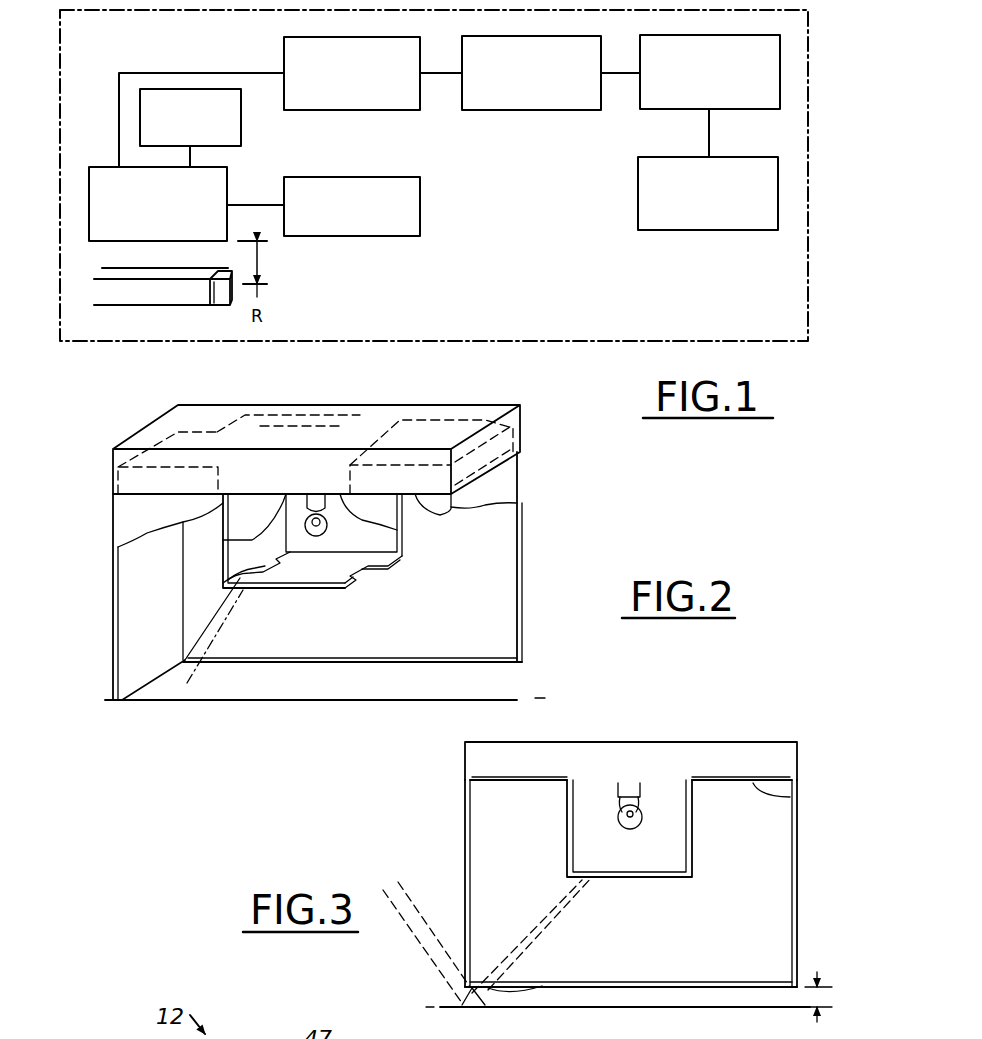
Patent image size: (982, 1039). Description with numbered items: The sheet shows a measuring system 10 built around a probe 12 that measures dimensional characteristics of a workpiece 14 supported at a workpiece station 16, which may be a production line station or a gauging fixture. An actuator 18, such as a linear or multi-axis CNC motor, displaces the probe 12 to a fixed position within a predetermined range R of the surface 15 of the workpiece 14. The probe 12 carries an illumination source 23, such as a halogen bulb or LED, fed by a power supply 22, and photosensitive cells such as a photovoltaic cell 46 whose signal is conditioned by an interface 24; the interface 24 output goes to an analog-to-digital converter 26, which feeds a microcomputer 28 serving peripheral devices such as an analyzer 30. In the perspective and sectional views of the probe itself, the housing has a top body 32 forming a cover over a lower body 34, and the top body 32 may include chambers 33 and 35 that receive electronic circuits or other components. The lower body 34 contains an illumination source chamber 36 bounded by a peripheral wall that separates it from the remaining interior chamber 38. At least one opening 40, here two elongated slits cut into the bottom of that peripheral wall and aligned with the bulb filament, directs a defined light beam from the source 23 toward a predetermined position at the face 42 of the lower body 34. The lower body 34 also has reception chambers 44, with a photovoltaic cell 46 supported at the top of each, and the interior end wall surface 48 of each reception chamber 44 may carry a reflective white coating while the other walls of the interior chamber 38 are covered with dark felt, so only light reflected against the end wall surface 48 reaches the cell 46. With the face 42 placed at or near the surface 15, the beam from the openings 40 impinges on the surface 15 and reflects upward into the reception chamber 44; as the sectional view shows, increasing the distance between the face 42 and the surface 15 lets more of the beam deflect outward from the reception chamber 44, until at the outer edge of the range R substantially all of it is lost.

In FIG. 1, the measuring system 10 is at (60, 94).
In FIG. 1, the probe 12 is at (229, 179).
In FIG. 2, the probe 12 is at (305, 562).
In FIG. 3, the probe 12 is at (617, 857).
In FIG. 1, the workpiece 14 is at (162, 312).
In FIG. 1, the surface 15 is at (168, 270).
In FIG. 2, the surface 15 is at (517, 698).
In FIG. 3, the surface 15 is at (460, 1005).
In FIG. 1, the workpiece station 16 is at (226, 309).
In FIG. 1, the actuator 18 is at (349, 176).
In FIG. 1, the power supply 22 is at (243, 136).
In FIG. 2, the illumination source 23 is at (327, 530).
In FIG. 3, the illumination source 23 is at (640, 826).
In FIG. 1, the interface 24 is at (345, 116).
In FIG. 1, the analog-to-digital converter 26 is at (550, 116).
In FIG. 1, the microcomputer 28 is at (683, 114).
In FIG. 1, the analyzer 30 is at (638, 199).
In FIG. 2, the analyzer 30 is at (100, 489).
In FIG. 3, the analyzer 30 is at (810, 746).
In FIG. 2, the top body 32 is at (113, 455).
In FIG. 3, the top body 32 is at (470, 767).
In FIG. 2, the chamber 33 is at (236, 406).
In FIG. 2, the lower body 34 is at (113, 604).
In FIG. 3, the lower body 34 is at (466, 886).
In FIG. 2, the chamber 35 is at (358, 406).
In FIG. 2, the illumination source chamber 36 is at (233, 556).
In FIG. 3, the illumination source chamber 36 is at (676, 855).
In FIG. 2, the interior chamber 38 is at (508, 622).
In FIG. 3, the interior chamber 38 is at (631, 984).
In FIG. 2, the opening 40 is at (224, 585).
In FIG. 2, the face 42 is at (150, 688).
In FIG. 3, the face 42 is at (543, 985).
In FIG. 2, the reception chamber 44 is at (135, 562).
In FIG. 3, the reception chamber 44 is at (483, 843).
In FIG. 2, the photovoltaic cell 46 is at (435, 494).
In FIG. 3, the photovoltaic cell 46 is at (552, 785).
In FIG. 2, the end wall surface 48 is at (137, 643).
In FIG. 3, the end wall surface 48 is at (465, 912).